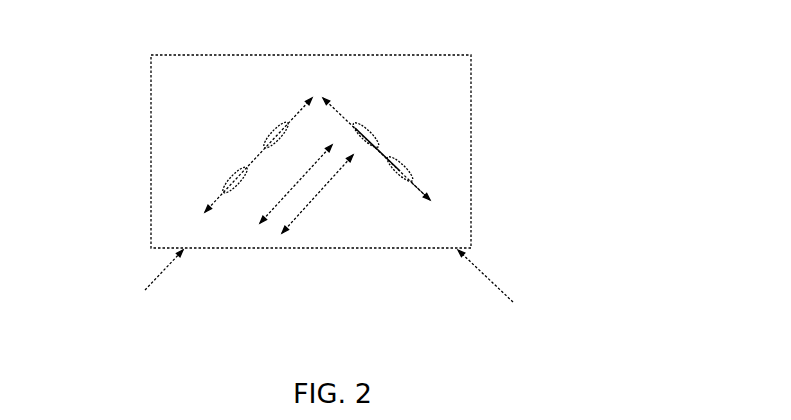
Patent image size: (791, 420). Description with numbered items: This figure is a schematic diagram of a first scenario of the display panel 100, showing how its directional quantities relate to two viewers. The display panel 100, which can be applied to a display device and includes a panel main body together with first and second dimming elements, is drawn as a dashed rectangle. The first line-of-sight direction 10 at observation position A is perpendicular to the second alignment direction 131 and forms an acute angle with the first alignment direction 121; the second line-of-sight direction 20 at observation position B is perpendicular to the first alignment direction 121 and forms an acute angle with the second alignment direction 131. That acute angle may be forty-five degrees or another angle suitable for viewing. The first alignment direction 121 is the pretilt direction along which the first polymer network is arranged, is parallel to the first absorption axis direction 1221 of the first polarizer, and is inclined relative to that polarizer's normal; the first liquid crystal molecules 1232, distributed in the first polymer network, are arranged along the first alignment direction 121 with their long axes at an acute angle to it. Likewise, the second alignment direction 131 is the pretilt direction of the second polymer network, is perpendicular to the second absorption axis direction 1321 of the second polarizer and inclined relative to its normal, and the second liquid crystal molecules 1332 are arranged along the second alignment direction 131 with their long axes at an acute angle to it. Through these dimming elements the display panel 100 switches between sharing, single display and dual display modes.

The display panel 100 is at (135, 37).
The first line-of-sight direction 10 is at (158, 275).
The second line-of-sight direction 20 is at (482, 273).
The first alignment direction 121 is at (203, 207).
The first liquid crystal molecules 1232 is at (237, 167).
The second alignment direction 131 is at (375, 135).
The second liquid crystal molecules 1332 is at (420, 190).
The first absorption axis direction 1221 is at (270, 212).
The second absorption axis direction 1321 is at (305, 208).